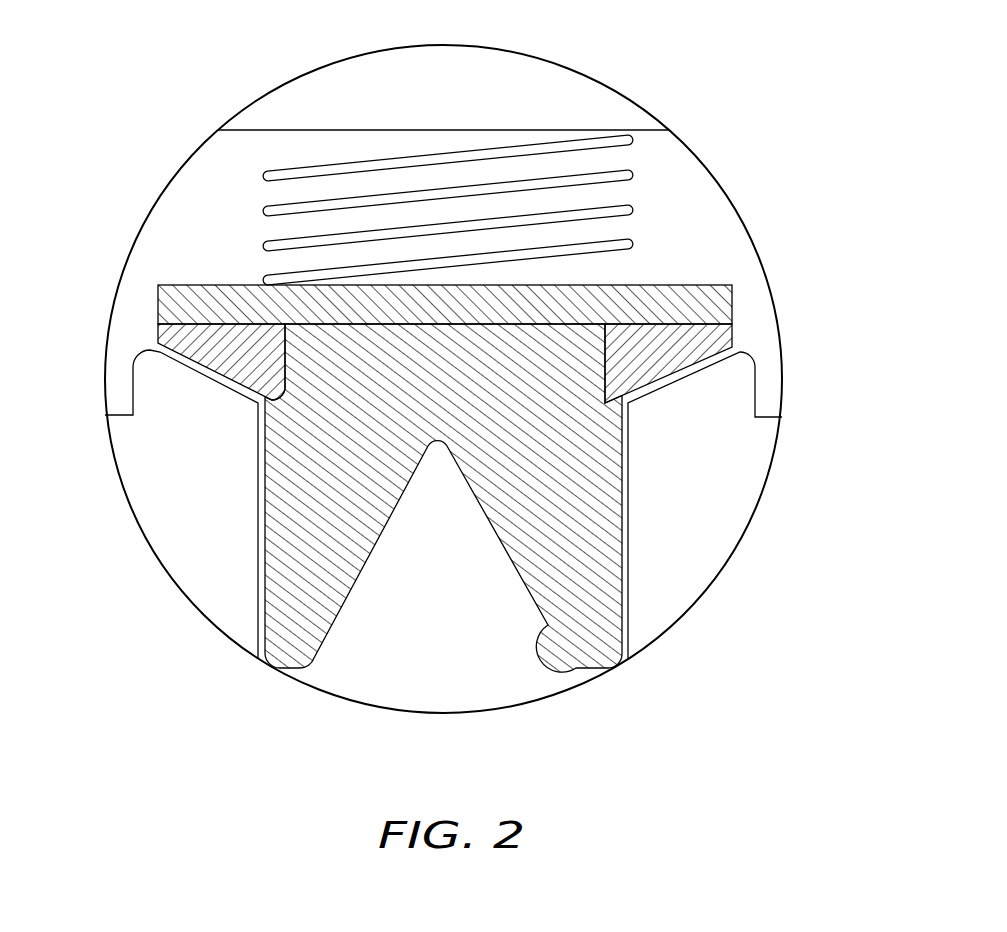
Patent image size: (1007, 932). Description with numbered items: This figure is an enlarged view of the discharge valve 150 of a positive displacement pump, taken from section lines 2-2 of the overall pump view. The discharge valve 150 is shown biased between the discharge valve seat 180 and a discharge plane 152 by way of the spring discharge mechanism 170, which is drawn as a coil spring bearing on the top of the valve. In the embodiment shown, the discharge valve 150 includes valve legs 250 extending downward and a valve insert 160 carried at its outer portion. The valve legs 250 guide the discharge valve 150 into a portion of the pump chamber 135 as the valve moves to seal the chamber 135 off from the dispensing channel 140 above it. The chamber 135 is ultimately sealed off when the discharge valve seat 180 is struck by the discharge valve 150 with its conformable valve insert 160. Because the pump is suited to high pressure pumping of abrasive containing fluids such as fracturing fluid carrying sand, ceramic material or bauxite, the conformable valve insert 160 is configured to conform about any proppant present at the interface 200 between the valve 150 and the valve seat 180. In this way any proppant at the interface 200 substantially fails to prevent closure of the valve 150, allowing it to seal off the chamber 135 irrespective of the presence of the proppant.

The pump chamber 135 is at (442, 662).
The dispensing channel 140 is at (707, 260).
The discharge valve 150 is at (195, 282).
The discharge plane 152 is at (325, 87).
The valve insert 160 is at (158, 340).
The spring discharge mechanism 170 is at (263, 198).
The discharge valve seat 180 is at (708, 562).
The interface 200 is at (739, 347).
The valve legs 250 is at (551, 633).
The section lines 2-2 is at (613, 88).